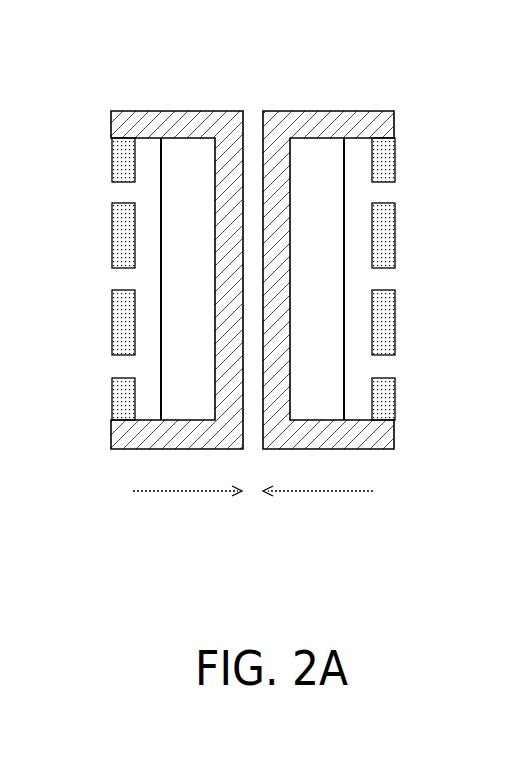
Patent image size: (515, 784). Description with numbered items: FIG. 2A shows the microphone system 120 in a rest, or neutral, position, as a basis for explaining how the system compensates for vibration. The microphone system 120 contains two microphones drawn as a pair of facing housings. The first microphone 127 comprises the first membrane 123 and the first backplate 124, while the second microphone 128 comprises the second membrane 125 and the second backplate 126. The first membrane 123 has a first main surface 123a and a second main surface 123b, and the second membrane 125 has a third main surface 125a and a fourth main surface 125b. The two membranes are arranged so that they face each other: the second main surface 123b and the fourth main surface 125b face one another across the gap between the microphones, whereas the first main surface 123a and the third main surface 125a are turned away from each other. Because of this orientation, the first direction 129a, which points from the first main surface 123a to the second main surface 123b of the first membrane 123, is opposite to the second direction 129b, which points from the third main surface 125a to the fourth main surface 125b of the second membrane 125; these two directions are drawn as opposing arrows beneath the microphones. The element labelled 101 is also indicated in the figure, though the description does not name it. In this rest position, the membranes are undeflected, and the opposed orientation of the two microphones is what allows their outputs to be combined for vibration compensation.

The display device 101 is at (402, 465).
The microphone system 120 is at (160, 589).
The first membrane 123 is at (344, 283).
The first main surface 123a is at (344, 190).
The second main surface 123b is at (344, 148).
The first backplate 124 is at (395, 398).
The second membrane 125 is at (160, 283).
The third main surface 125a is at (160, 192).
The fourth main surface 125b is at (163, 150).
The second backplate 126 is at (112, 400).
The first microphone 127 is at (282, 110).
The second microphone 128 is at (233, 110).
The first direction 129a is at (318, 493).
The second direction 129b is at (178, 493).